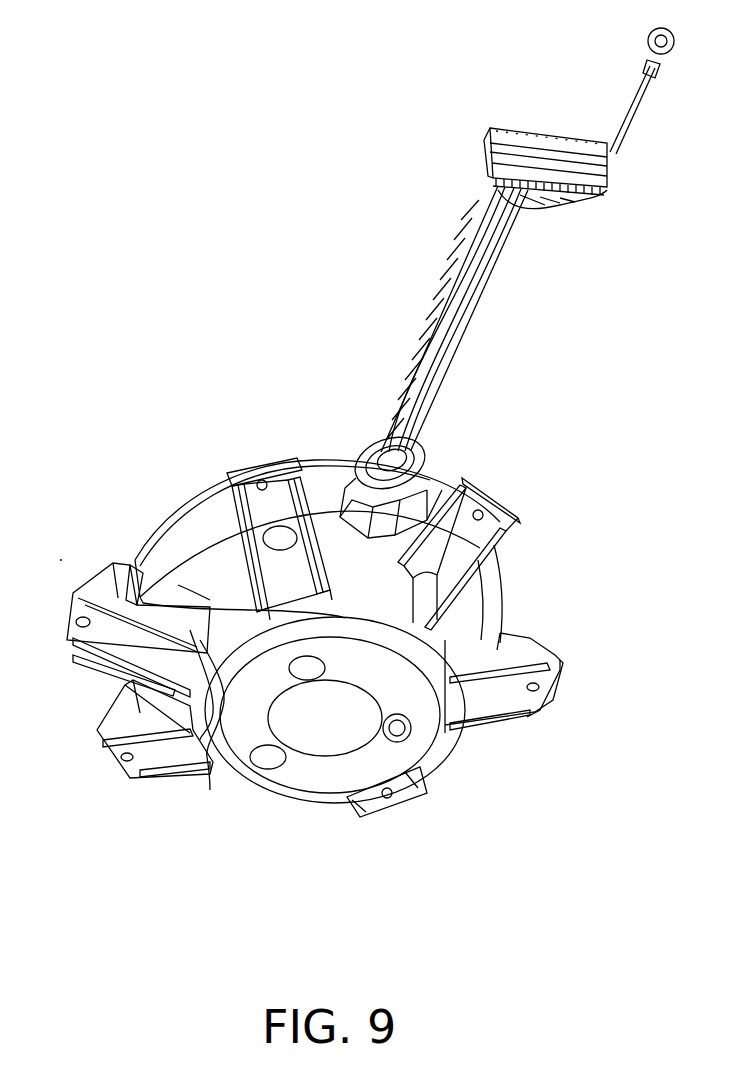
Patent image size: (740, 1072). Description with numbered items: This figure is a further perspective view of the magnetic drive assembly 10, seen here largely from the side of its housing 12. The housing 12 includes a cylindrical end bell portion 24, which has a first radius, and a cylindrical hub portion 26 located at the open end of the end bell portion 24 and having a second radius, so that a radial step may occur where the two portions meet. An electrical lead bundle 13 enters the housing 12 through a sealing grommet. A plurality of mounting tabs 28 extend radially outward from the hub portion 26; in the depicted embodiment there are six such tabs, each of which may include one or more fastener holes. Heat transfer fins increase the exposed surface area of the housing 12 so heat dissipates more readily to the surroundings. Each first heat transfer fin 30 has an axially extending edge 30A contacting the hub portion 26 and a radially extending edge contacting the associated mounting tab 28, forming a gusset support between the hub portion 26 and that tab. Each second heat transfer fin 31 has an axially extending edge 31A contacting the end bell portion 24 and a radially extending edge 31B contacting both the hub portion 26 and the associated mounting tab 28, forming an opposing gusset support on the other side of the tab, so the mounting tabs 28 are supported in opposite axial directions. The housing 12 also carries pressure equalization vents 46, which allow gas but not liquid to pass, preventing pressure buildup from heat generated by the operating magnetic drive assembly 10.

The magnetic drive assembly 10 is at (240, 300).
The housing 12 is at (302, 817).
The electrical lead bundle 13 is at (497, 318).
The cylindrical end bell portion 24 is at (418, 745).
The cylindrical hub portion 26 is at (205, 515).
The mounting tab 28 is at (553, 688).
The first heat transfer fin 30 is at (95, 578).
The axially extending edge 30A is at (133, 560).
The second heat transfer fin 31 is at (170, 782).
The axially extending edge 31A is at (215, 678).
The radially extending edge 31B is at (178, 585).
The pressure equalization vent 46 is at (280, 538).